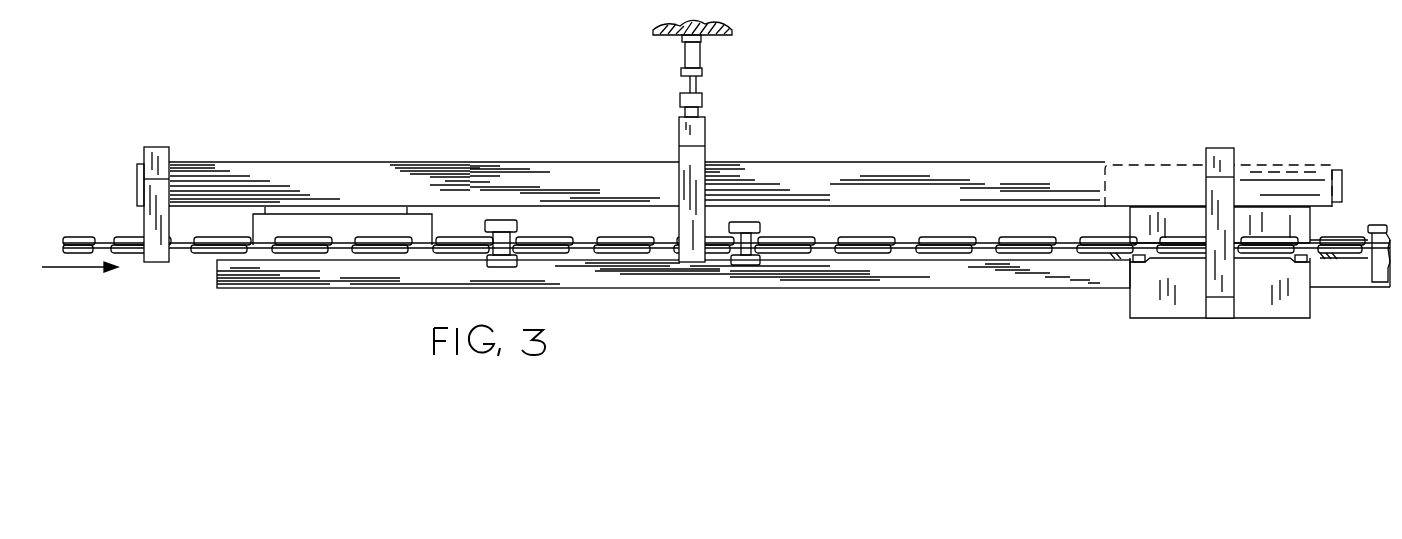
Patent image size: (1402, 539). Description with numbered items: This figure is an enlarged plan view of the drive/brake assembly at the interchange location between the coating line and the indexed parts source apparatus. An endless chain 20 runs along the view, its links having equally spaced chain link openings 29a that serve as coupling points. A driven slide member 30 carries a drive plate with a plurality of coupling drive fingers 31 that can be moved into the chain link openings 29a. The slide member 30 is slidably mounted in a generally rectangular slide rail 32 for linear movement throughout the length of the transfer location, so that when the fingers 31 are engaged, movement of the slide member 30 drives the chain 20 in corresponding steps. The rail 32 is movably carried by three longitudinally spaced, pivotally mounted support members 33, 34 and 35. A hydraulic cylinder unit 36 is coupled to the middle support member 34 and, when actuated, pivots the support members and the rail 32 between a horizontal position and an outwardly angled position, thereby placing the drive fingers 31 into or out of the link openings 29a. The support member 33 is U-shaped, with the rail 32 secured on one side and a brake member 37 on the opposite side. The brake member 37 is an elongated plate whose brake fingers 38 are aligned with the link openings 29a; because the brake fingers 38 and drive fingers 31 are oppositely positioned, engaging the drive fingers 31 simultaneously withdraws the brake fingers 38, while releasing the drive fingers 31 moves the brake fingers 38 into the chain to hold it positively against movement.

The endless chain 20 is at (930, 232).
The chain link openings 29a is at (982, 236).
The driven slide member 30 is at (1290, 182).
The coupling drive fingers 31 is at (1133, 225).
The slide rail 32 is at (945, 172).
The support member 33 is at (1195, 175).
The middle support member 34 is at (697, 127).
The support member 35 is at (168, 147).
The hydraulic cylinder unit 36 is at (702, 57).
The brake member 37 is at (1326, 303).
The brake fingers 38 is at (1140, 268).